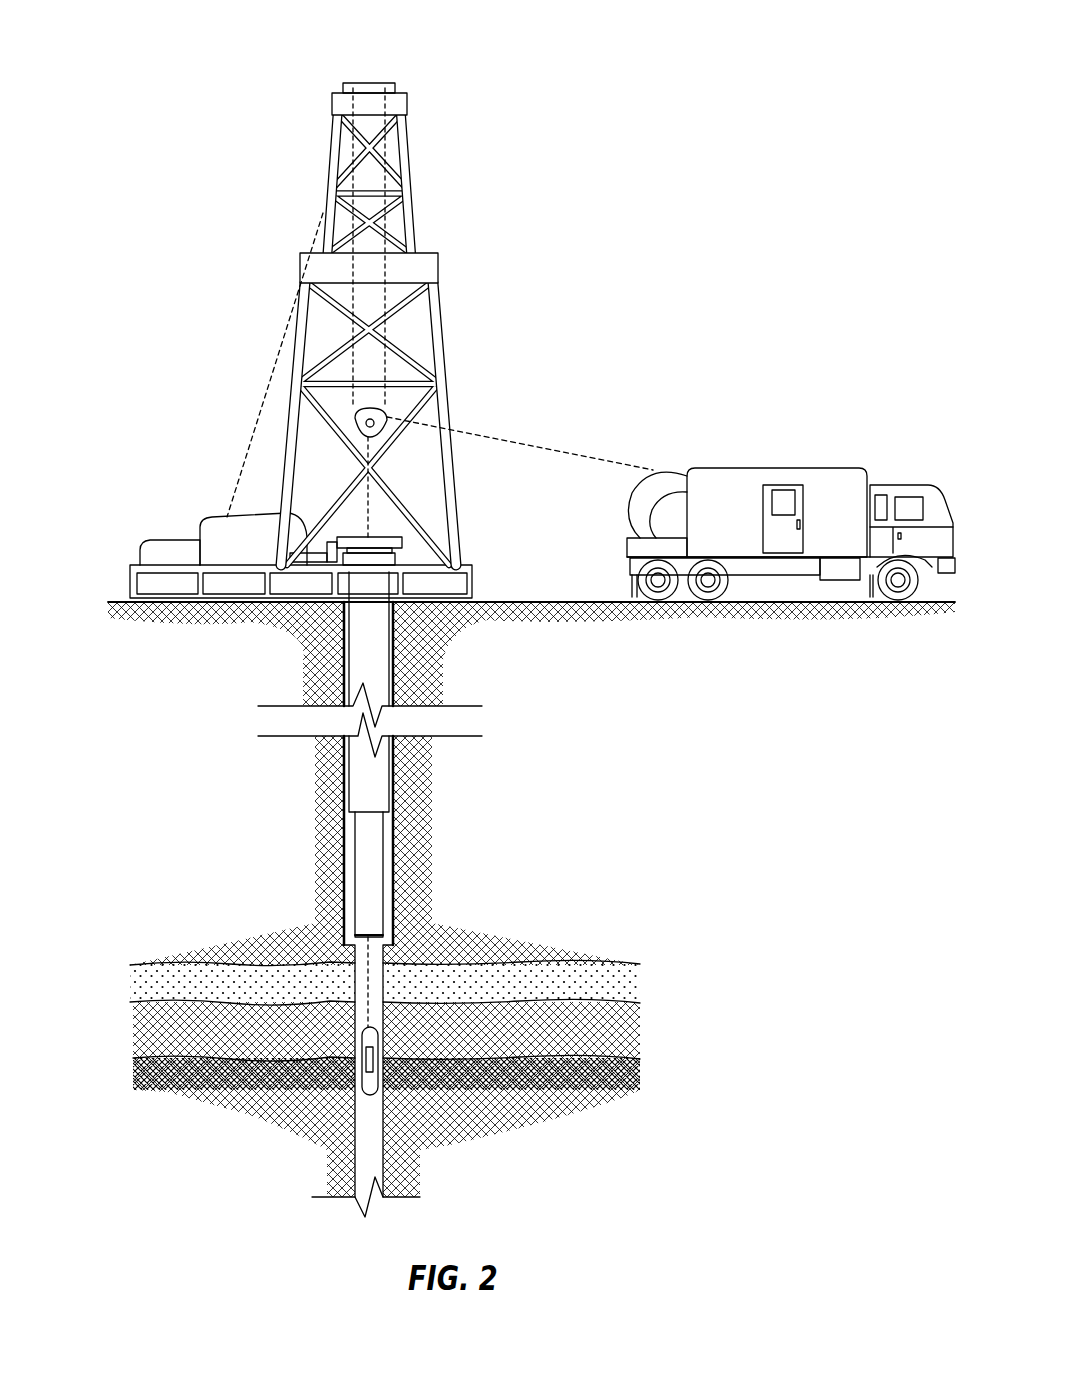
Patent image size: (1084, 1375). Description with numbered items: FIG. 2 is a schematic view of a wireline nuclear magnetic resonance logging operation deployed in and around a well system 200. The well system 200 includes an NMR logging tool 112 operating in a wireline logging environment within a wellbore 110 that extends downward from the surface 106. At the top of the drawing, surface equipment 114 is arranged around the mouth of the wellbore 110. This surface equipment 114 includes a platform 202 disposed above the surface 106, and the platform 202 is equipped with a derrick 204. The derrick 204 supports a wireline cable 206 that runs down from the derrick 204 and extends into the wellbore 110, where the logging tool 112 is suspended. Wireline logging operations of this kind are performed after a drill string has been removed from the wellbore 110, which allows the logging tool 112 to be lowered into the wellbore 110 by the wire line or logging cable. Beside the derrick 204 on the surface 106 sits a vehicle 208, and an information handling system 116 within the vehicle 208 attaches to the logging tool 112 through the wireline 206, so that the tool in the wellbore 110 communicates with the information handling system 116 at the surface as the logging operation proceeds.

The well system 200 is at (185, 52).
The surface 106 is at (533, 602).
The wellbore 110 is at (342, 898).
The NMR logging tool 112 is at (362, 1087).
The surface equipment 114 is at (655, 309).
The information handling system 116 is at (780, 490).
The platform 202 is at (130, 585).
The derrick 204 is at (410, 173).
The wireline cable 206 is at (372, 513).
The vehicle 208 is at (857, 468).